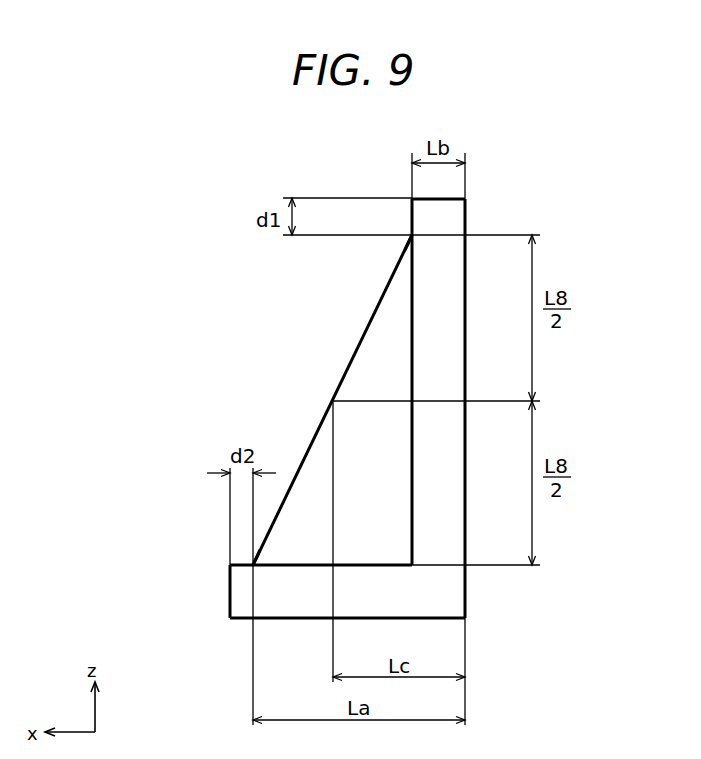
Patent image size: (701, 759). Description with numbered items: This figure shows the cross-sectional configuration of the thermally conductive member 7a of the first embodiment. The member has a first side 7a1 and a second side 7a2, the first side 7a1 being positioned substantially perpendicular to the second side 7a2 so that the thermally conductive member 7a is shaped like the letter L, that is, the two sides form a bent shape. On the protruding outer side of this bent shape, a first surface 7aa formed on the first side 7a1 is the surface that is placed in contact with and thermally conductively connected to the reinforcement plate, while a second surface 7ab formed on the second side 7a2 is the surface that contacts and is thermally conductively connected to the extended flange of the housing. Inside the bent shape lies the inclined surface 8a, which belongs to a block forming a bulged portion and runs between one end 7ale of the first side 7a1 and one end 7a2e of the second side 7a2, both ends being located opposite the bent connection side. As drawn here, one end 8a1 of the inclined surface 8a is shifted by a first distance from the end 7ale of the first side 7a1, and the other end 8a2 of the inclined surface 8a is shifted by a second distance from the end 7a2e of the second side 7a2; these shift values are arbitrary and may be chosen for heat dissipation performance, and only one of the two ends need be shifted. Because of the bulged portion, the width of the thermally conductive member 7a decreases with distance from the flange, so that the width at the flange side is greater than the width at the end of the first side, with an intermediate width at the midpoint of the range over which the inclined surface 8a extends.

The thermally conductive member 7a is at (342, 419).
The first side 7a1 is at (482, 386).
The second side 7a2 is at (298, 625).
The first surface 7aa is at (466, 216).
The one end of the first side 7ale is at (442, 199).
The one end of the second side 7a2e is at (230, 590).
The second surface 7ab is at (240, 618).
The inclined surface 8a is at (283, 400).
The one end of the inclined surface 8a1 is at (411, 237).
The other end of the inclined surface 8a2 is at (253, 565).